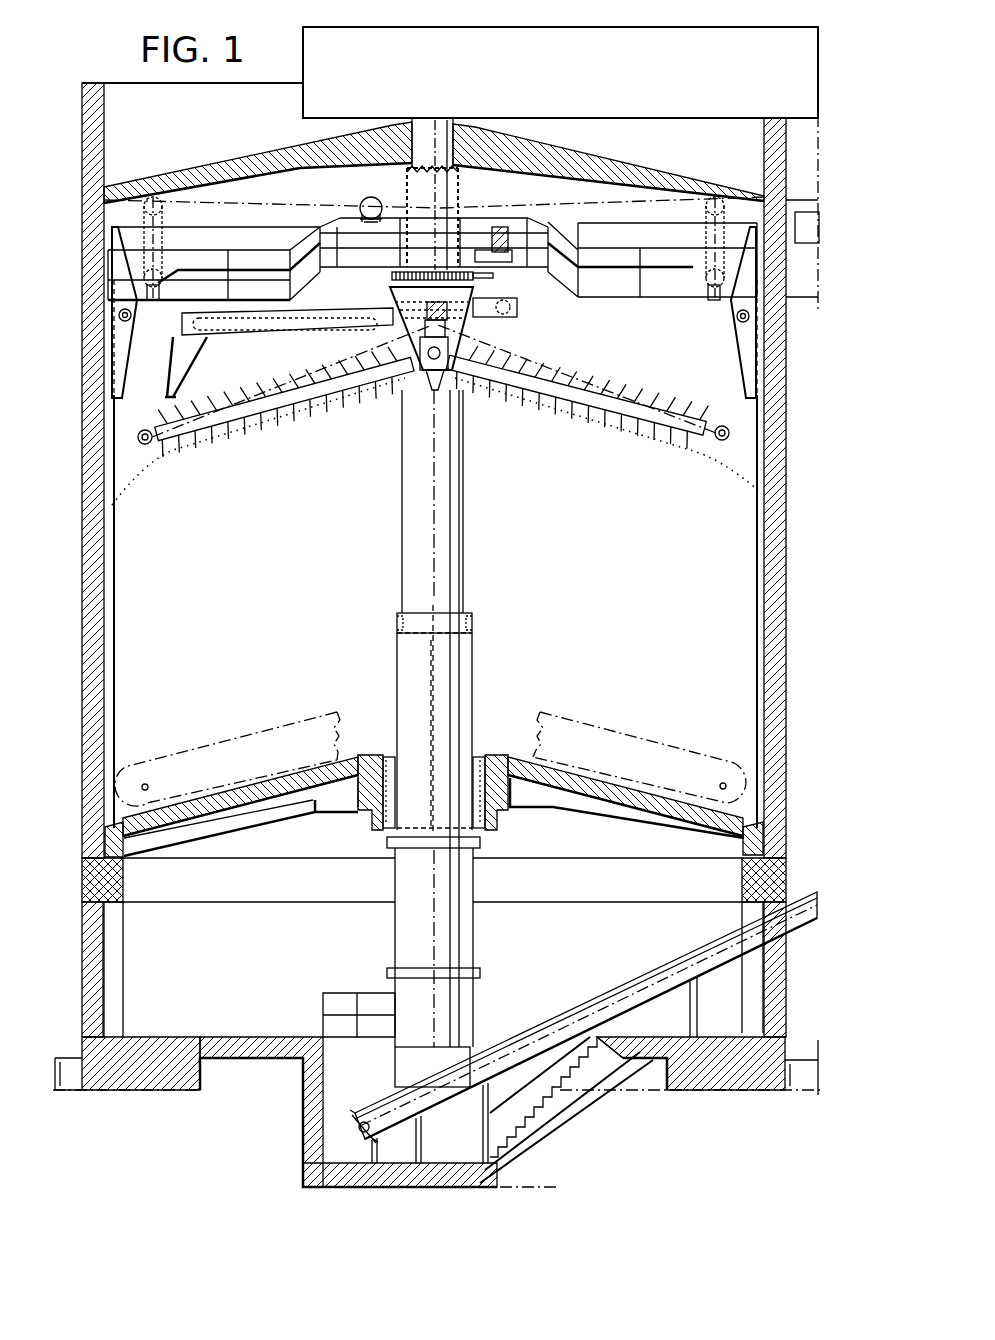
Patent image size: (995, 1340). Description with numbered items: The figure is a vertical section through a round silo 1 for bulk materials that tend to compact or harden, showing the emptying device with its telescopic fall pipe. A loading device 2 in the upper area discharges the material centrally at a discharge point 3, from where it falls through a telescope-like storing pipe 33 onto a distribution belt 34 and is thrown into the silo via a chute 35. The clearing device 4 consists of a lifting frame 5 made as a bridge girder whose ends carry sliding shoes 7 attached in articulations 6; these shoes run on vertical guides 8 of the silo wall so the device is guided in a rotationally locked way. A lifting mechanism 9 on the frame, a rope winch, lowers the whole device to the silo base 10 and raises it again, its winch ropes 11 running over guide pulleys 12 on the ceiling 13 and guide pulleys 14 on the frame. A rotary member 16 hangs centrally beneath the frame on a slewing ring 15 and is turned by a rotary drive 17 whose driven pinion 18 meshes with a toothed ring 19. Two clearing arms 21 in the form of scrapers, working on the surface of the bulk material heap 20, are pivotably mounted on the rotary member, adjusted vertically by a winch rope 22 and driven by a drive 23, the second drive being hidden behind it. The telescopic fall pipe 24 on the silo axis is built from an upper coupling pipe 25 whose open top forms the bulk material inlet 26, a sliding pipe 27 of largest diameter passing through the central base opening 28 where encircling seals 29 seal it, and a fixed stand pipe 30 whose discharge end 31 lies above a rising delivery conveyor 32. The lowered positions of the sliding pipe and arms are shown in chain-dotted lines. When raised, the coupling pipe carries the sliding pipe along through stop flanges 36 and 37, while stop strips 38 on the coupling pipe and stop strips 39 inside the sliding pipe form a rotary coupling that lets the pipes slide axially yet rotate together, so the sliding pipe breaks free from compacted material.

The round silo 1 is at (97, 460).
The loading device 2 is at (612, 40).
The discharge point 3 is at (430, 132).
The clearing device 4 is at (571, 234).
The lifting frame 5 is at (628, 298).
The articulations 6 is at (118, 317).
The sliding shoes 7 is at (120, 350).
The vertical guides 8 is at (115, 414).
The lifting mechanism 9 is at (372, 205).
The silo base 10 is at (607, 777).
The winch ropes 11 is at (237, 200).
The guide pulleys 12 is at (152, 200).
The ceiling 13 is at (630, 170).
The guide pulleys 14 is at (157, 300).
The slewing ring 15 is at (388, 288).
The rotary member 16 is at (503, 340).
The rotary drive 17 is at (494, 236).
The driven pinion 18 is at (495, 277).
The toothed ring 19 is at (393, 279).
The bulk material heap 20 is at (582, 539).
The clearing arms 21 is at (298, 440).
The winch rope 22 is at (315, 360).
The drive 23 is at (410, 329).
The telescopic fall pipe 24 is at (398, 572).
The coupling pipe 25 is at (463, 473).
The bulk material inlet 26 is at (437, 395).
The sliding pipe 27 is at (466, 658).
The base opening 28 is at (390, 755).
The encircling seals 29 is at (480, 755).
The stand pipe 30 is at (479, 978).
The discharge end 31 is at (400, 1065).
The delivery conveyor 32 is at (637, 975).
The storing pipe 33 is at (447, 183).
The distribution belt 34 is at (240, 322).
The chute 35 is at (172, 375).
The flange 36 is at (396, 618).
The flange 37 is at (396, 631).
The stop strips 38 is at (443, 610).
The stop strips 39 is at (437, 688).